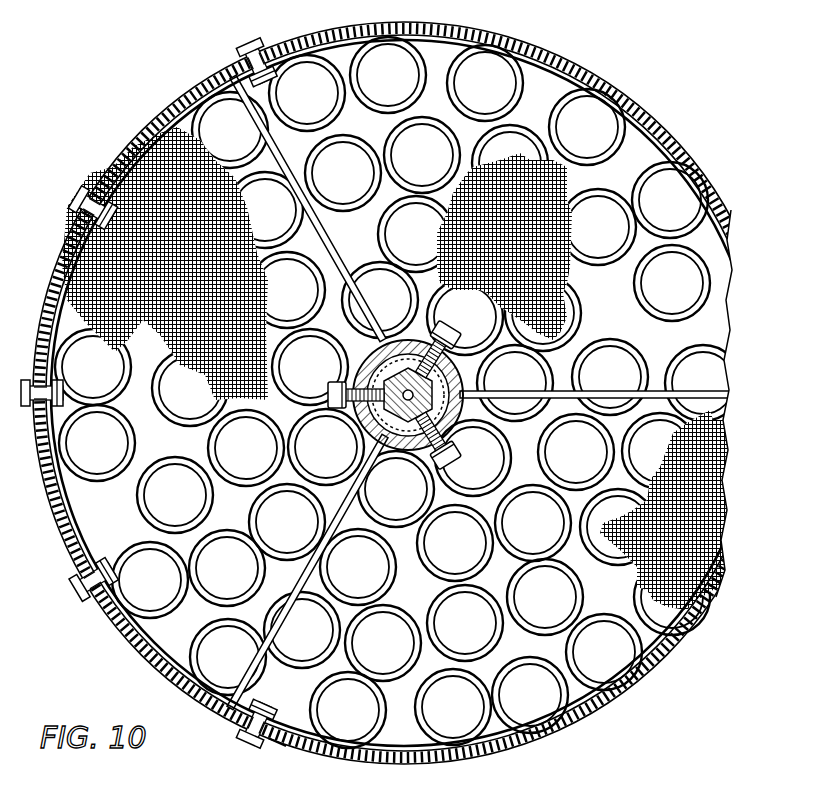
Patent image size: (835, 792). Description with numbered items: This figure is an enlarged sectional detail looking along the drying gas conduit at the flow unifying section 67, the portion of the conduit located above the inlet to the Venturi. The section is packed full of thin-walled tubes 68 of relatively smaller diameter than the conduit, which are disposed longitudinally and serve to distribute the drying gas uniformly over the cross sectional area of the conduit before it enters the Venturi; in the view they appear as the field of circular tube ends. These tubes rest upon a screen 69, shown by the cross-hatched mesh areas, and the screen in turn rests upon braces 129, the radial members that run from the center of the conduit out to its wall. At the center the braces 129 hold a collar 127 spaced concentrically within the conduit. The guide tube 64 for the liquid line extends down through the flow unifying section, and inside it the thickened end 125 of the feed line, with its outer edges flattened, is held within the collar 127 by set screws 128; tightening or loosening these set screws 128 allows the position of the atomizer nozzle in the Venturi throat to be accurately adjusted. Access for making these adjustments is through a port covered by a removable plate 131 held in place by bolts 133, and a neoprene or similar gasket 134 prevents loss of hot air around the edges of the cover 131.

The guide tube 64 is at (364, 379).
The flow unifying section 67 is at (597, 75).
The thin-walled tubes 68 is at (640, 185).
The screen 69 is at (568, 275).
The thickened end of feed line 125 is at (451, 371).
The collar 127 is at (452, 419).
The set screws 128 is at (445, 331).
The braces 129 is at (333, 251).
The removable plate 131 is at (52, 283).
The bolts 133 is at (80, 208).
The gasket 134 is at (287, 745).